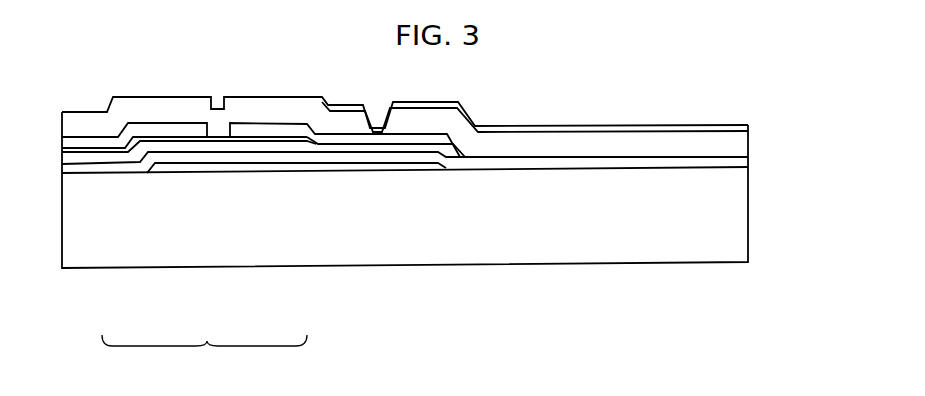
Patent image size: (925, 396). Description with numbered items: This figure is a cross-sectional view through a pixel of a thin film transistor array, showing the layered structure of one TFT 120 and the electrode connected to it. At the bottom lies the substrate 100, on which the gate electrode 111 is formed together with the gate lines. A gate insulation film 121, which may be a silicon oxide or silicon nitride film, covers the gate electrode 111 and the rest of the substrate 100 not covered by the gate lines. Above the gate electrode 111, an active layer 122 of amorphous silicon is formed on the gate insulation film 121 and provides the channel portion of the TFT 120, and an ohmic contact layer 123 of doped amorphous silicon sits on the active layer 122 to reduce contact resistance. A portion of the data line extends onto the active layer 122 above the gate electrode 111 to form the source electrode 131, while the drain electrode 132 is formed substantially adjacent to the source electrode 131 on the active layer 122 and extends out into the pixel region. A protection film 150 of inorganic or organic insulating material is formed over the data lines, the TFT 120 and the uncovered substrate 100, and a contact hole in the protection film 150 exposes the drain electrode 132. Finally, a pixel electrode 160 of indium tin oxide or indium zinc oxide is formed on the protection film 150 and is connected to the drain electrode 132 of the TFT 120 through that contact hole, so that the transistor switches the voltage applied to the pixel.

The substrate 100 is at (743, 233).
The gate electrode 111 is at (212, 168).
The TFT 120 is at (204, 356).
The gate insulation film 121 is at (748, 166).
The active layer 122 is at (167, 145).
The ohmic contact layer 123 is at (261, 136).
The source electrode 131 is at (121, 141).
The drain electrode 132 is at (300, 139).
The protection film 150 is at (748, 150).
The pixel electrode 160 is at (748, 126).